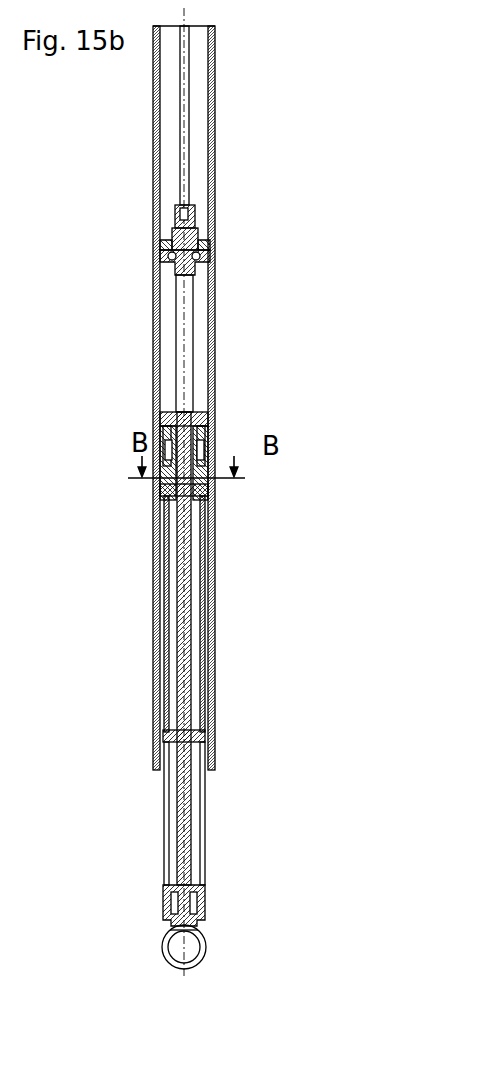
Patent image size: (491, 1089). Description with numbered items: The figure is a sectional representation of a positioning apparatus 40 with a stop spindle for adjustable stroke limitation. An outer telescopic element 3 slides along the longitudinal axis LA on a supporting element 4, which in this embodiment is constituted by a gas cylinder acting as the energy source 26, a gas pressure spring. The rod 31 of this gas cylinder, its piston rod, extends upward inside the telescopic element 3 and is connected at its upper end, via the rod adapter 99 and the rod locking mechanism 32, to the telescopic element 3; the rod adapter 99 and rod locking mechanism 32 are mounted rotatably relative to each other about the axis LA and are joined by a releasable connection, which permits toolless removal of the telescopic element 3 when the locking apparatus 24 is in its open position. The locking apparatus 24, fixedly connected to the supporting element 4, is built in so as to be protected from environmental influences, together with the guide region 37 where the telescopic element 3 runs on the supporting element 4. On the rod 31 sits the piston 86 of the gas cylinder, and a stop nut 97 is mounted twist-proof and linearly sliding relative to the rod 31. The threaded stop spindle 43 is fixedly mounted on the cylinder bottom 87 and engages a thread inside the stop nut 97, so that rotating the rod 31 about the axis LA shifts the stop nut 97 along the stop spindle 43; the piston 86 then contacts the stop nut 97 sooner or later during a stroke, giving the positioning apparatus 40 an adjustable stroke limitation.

The telescopic element 3 is at (213, 600).
The rod 31 is at (193, 334).
The rod adapter 99 is at (196, 232).
The rod locking mechanism 32 is at (203, 258).
The locking apparatus 24 is at (233, 420).
The guide 37 is at (160, 413).
The stop nut 97 is at (170, 493).
The positioning apparatus 40 is at (243, 563).
The piston 86 is at (175, 735).
The stop spindle 43 is at (188, 768).
The supporting element 4 is at (166, 810).
The energy source 26 is at (192, 833).
The cylinder bottom 87 is at (200, 890).
The longitudinal axis LA is at (186, 968).